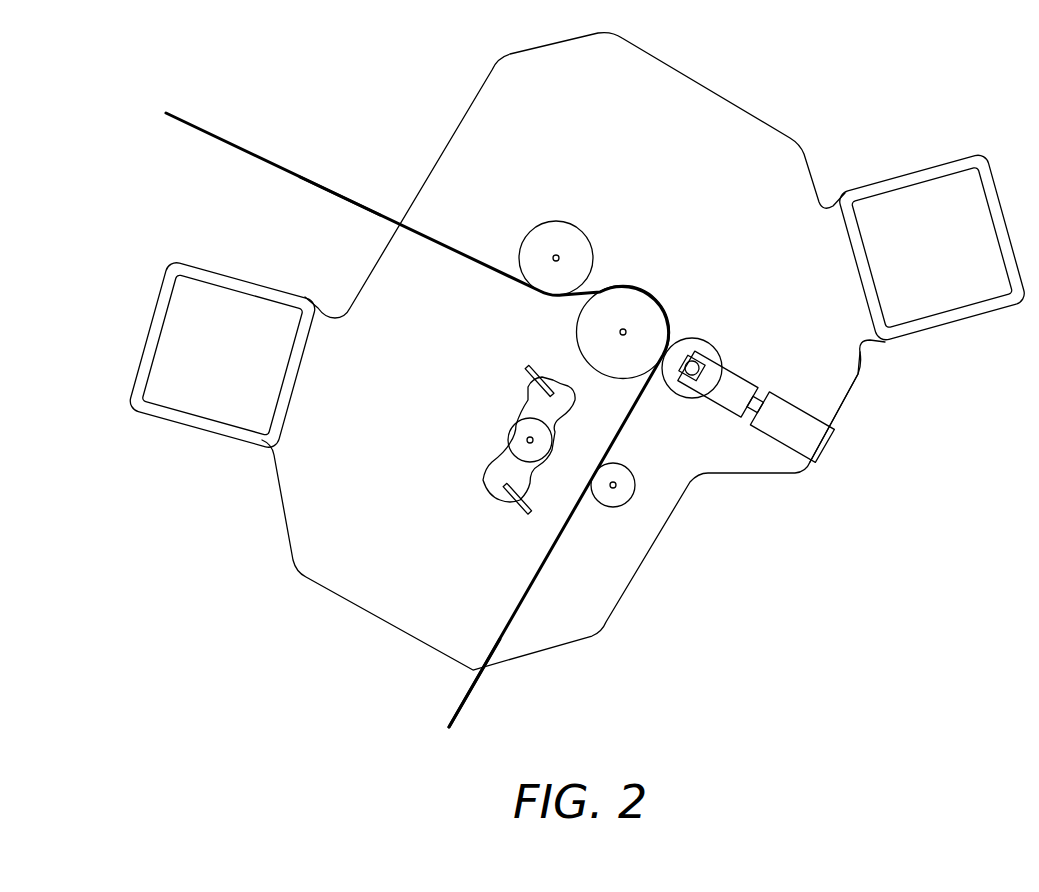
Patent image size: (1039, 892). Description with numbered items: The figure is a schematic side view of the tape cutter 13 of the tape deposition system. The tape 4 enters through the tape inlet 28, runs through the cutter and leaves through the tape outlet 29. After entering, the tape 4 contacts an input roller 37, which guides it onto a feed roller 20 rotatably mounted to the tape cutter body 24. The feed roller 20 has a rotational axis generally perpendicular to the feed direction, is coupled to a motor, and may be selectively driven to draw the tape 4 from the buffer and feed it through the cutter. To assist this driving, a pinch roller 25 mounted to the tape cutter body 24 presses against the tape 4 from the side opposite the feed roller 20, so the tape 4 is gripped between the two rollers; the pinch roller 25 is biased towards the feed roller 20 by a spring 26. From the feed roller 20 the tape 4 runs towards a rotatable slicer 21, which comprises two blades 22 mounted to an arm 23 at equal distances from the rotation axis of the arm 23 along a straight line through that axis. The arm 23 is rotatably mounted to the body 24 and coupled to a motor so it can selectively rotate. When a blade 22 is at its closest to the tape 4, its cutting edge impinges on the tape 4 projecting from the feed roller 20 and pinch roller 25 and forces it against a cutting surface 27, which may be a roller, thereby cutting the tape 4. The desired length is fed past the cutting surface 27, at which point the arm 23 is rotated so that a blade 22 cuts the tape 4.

The tape 4 is at (218, 138).
The tape cutter 13 is at (782, 73).
The feed roller 20 is at (580, 328).
The rotatable slicer 21 is at (483, 473).
The blade 22 is at (525, 378).
The arm 23 is at (513, 432).
The tape cutter body 24 is at (842, 393).
The pinch roller 25 is at (703, 348).
The spring 26 is at (760, 390).
The cutting surface 27 is at (623, 472).
The tape inlet 28 is at (394, 198).
The tape outlet 29 is at (484, 686).
The input roller 37 is at (556, 229).